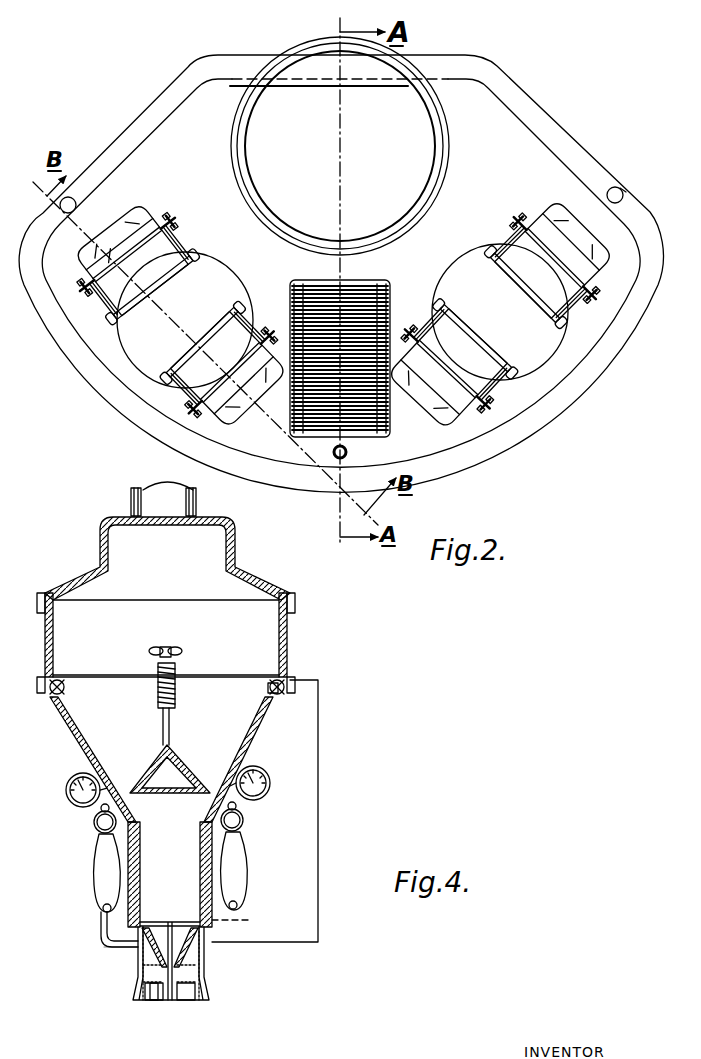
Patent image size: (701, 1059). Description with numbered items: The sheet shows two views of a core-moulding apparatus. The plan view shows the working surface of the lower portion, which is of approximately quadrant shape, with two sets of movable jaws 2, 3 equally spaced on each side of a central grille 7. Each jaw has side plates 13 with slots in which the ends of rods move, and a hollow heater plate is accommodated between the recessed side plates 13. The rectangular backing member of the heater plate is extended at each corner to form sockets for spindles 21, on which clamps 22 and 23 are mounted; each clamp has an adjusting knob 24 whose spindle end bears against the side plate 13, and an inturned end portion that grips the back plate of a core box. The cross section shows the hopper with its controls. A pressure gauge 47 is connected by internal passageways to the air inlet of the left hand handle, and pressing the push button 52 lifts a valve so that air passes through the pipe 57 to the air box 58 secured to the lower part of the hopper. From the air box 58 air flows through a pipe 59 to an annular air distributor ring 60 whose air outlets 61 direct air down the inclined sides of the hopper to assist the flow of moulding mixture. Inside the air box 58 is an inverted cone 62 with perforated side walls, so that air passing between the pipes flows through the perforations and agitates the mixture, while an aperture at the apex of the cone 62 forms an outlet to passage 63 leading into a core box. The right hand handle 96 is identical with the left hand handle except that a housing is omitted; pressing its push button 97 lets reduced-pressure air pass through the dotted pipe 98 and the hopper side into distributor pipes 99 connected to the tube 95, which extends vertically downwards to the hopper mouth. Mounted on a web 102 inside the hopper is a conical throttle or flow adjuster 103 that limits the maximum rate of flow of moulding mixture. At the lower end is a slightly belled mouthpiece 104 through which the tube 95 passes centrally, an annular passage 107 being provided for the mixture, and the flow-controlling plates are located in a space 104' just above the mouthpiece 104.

In FIG. 2, the set of movable jaws 2 is at (173, 309).
In FIG. 2, the set of movable jaws 3 is at (504, 322).
In FIG. 2, the central grille 7 is at (365, 435).
In FIG. 2, the side plate 13 is at (128, 225).
In FIG. 2, the spindle 21 is at (184, 258).
In FIG. 2, the clamp 22 is at (110, 304).
In FIG. 2, the clamp 23 is at (175, 254).
In FIG. 2, the adjusting knob 24 is at (161, 228).
In FIG. 4, the pressure gauge 47 is at (75, 778).
In FIG. 4, the push button 52 is at (97, 824).
In FIG. 4, the pipe 57 is at (101, 921).
In FIG. 4, the air box 58 is at (108, 942).
In FIG. 4, the pipe 59 is at (318, 738).
In FIG. 4, the air distributor ring 60 is at (284, 690).
In FIG. 4, the air outlet 61 is at (268, 689).
In FIG. 4, the inverted cone 62 is at (185, 962).
In FIG. 4, the passage 63 is at (142, 969).
In FIG. 4, the tube 95 is at (170, 950).
In FIG. 4, the right hand handle 96 is at (238, 870).
In FIG. 4, the push button 97 is at (243, 822).
In FIG. 4, the pipe 98 is at (247, 925).
In FIG. 4, the distributor pipe 99 is at (183, 920).
In FIG. 4, the web 102 is at (120, 660).
In FIG. 4, the conical throttle 103 is at (151, 758).
In FIG. 4, the belled mouthpiece 104 is at (121, 993).
In FIG. 4, the space 104' is at (166, 1012).
In FIG. 4, the annular passage 107 is at (197, 986).